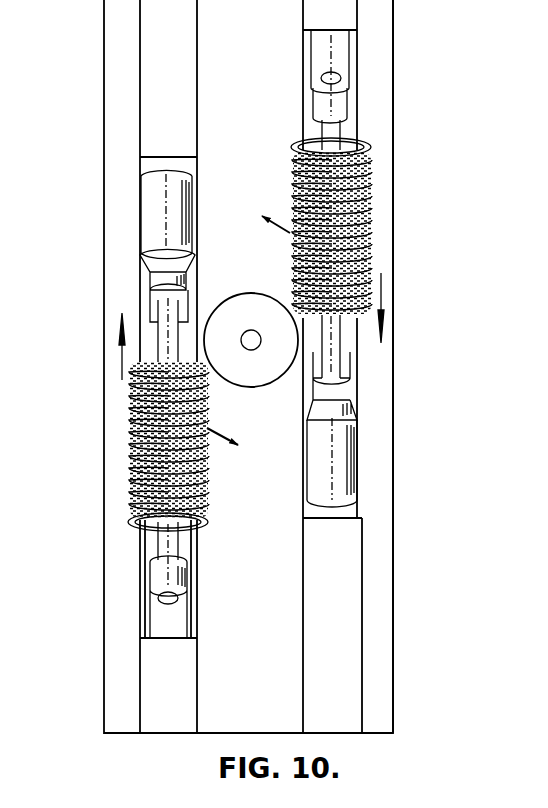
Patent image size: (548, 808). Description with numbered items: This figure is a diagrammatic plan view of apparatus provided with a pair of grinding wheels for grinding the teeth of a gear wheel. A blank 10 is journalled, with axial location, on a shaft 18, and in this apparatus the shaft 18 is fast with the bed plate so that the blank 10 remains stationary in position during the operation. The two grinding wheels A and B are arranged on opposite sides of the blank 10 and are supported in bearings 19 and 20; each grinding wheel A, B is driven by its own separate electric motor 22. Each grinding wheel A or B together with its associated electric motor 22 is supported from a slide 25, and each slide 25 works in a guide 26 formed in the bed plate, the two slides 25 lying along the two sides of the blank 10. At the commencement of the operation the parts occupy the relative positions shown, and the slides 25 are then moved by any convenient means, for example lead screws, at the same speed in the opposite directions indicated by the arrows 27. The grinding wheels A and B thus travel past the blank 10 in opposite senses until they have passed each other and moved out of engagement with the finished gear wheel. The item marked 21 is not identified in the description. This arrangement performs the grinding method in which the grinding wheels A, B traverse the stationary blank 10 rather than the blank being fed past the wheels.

The blank 10 is at (251, 300).
The shaft 18 is at (251, 350).
The bearing 19 is at (333, 102).
The bearing 20 is at (157, 285).
The housing wall 21 is at (383, 360).
The electric motor 22 is at (145, 222).
The slide 25 is at (140, 157).
The guide 26 is at (147, 107).
The arrow 27 is at (122, 357).
The grinding wheel A is at (368, 222).
The grinding wheel B is at (135, 440).